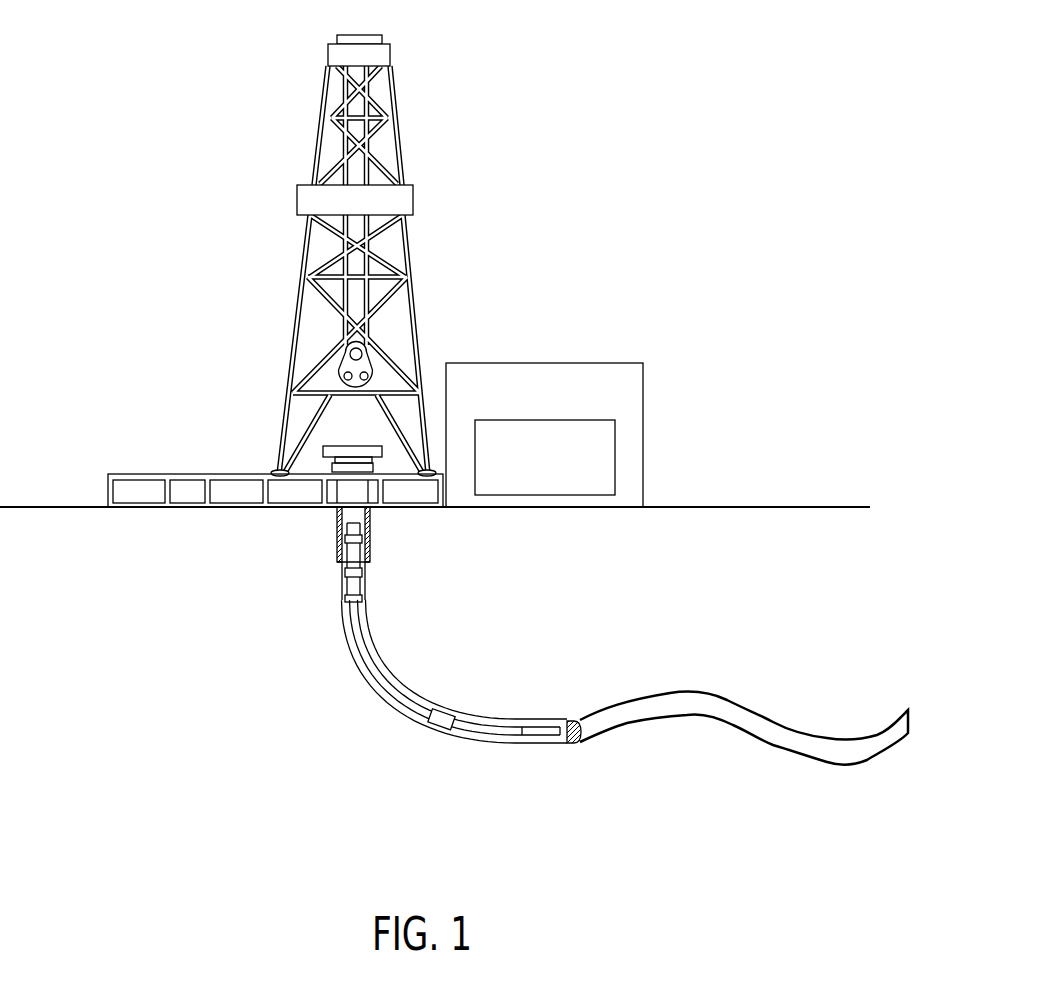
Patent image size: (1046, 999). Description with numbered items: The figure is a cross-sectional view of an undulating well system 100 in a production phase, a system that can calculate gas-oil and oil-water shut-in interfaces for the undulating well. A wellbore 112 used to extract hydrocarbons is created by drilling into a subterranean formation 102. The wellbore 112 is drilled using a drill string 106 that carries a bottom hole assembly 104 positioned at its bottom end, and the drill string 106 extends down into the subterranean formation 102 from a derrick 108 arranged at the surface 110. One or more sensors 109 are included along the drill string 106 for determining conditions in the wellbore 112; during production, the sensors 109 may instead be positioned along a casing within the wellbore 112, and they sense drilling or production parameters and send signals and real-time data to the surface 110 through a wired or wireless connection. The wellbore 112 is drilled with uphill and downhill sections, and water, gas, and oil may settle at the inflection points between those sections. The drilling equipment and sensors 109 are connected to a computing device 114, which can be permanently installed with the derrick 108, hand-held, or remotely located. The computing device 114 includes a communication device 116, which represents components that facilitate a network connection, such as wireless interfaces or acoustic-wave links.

The undulating well system 100 is at (670, 87).
The subterranean formation 102 is at (214, 545).
The bottom hole assembly 104 is at (540, 727).
The drill string 106 is at (360, 617).
The derrick 108 is at (262, 315).
The sensors 109 is at (430, 722).
The surface 110 is at (650, 528).
The wellbore 112 is at (342, 592).
The computing device 114 is at (643, 392).
The communication device 116 is at (615, 458).